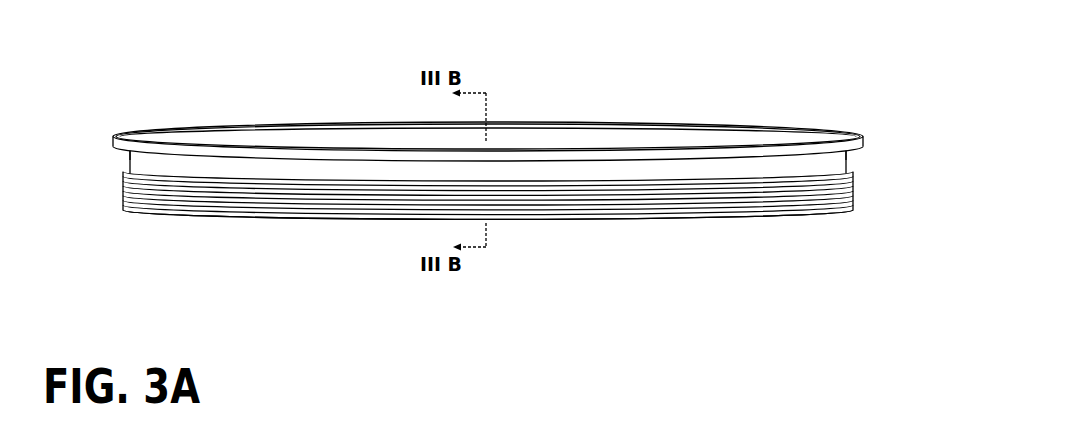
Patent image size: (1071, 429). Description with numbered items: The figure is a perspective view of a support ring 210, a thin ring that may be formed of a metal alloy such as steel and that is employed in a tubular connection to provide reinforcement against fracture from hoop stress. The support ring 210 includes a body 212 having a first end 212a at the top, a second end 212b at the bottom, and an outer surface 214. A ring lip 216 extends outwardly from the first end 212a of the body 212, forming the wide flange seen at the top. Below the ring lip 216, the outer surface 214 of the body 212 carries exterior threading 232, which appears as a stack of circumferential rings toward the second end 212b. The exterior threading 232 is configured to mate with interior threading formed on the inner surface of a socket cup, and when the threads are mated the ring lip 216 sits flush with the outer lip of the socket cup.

The support ring 210 is at (160, 90).
The body 212 is at (131, 167).
The first end 212a is at (130, 152).
The second end 212b is at (141, 214).
The outer surface 214 is at (833, 164).
The ring lip 216 is at (863, 141).
The exterior threading 232 is at (853, 187).